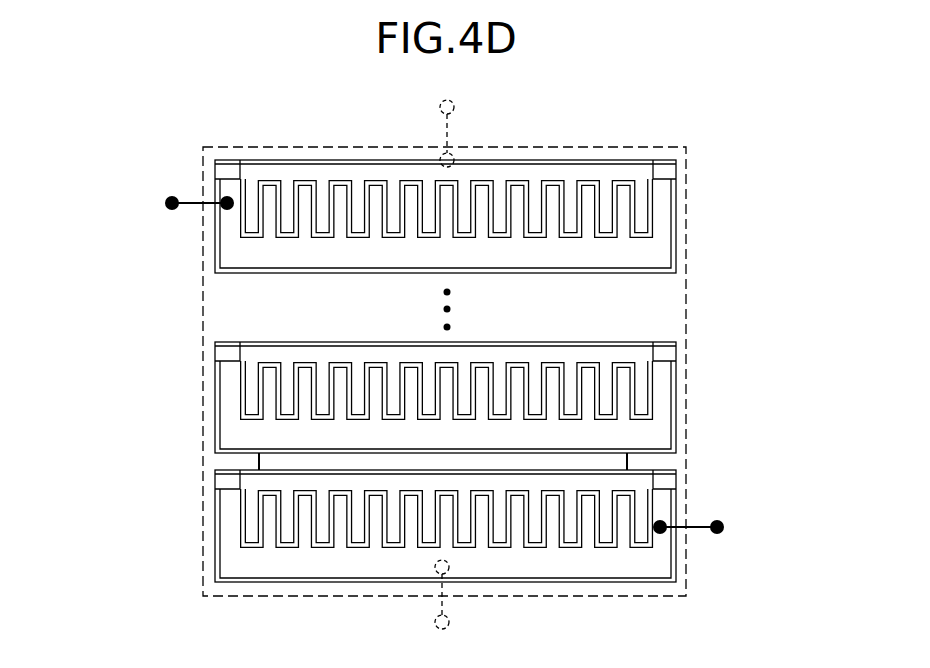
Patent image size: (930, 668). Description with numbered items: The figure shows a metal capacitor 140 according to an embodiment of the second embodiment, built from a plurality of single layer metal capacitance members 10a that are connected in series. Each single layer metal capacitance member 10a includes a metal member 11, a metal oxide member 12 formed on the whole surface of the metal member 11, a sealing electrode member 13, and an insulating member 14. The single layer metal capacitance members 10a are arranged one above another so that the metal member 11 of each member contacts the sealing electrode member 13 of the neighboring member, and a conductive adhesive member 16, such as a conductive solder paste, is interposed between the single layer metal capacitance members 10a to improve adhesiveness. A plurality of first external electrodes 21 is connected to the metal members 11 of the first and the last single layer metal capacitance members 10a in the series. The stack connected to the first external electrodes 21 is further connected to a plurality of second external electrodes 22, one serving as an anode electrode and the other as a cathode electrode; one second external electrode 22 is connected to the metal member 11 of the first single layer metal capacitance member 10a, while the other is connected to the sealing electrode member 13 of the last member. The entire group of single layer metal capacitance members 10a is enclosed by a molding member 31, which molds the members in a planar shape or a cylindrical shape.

The metal capacitor 140 is at (309, 131).
The single layer metal capacitance member 10a is at (439, 369).
The metal member 11 is at (657, 257).
The metal oxide member 12 is at (673, 225).
The sealing electrode member 13 is at (627, 173).
The insulating member 14 is at (760, 248).
The conductive adhesive member 16 is at (272, 462).
The first external electrode 21 is at (168, 212).
The second external electrode 22 is at (453, 103).
The molding member 31 is at (583, 597).